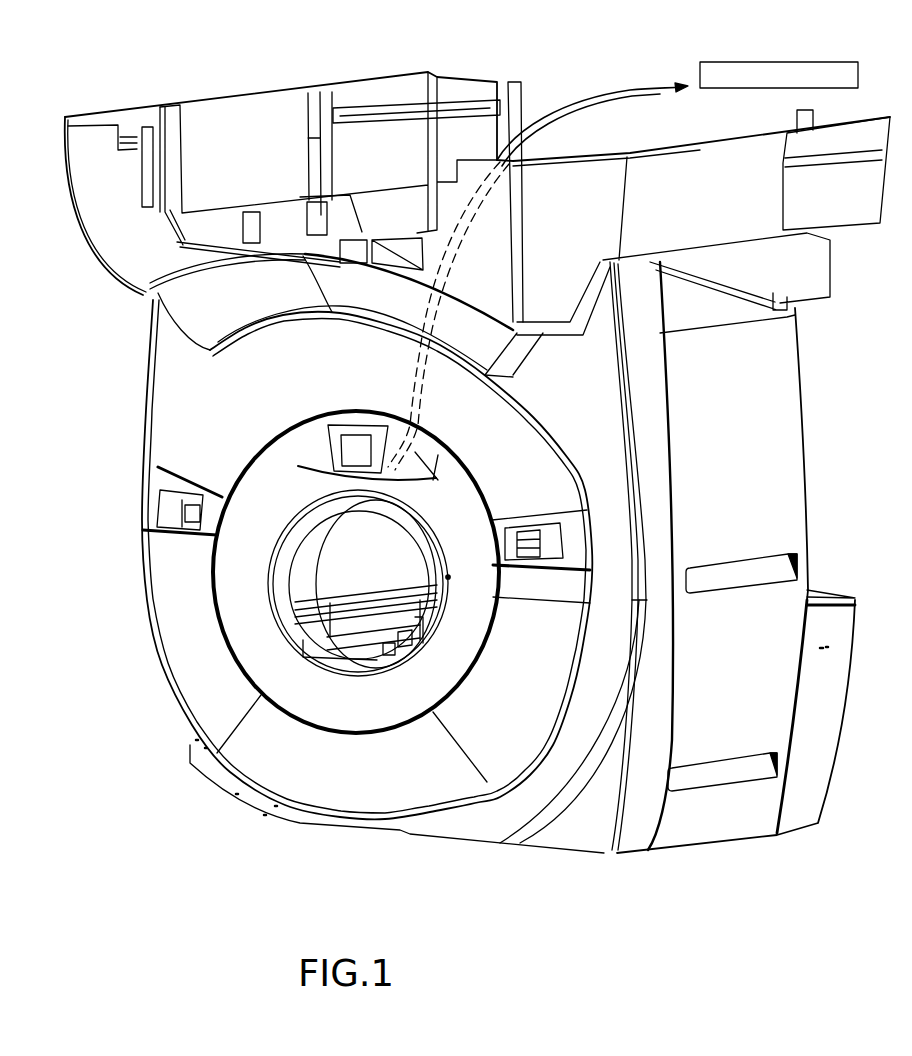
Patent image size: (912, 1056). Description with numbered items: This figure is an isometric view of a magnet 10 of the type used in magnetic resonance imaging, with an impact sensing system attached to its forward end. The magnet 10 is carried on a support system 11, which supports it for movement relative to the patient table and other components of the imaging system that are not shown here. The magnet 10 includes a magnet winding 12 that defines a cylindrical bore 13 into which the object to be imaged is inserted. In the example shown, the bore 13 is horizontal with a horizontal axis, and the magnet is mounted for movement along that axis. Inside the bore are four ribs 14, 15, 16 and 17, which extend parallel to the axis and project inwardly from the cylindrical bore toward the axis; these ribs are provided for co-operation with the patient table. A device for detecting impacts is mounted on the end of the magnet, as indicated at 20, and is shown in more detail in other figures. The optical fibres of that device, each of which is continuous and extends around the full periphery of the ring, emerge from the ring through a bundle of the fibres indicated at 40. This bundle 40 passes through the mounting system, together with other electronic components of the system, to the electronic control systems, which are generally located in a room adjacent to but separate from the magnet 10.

The magnet 10 is at (137, 468).
The support system 11 is at (682, 133).
The magnet winding 12 is at (393, 798).
The cylindrical bore 13 is at (300, 570).
The rib 14 is at (303, 609).
The rib 15 is at (345, 645).
The rib 16 is at (390, 650).
The rib 17 is at (405, 640).
The device for detecting impacts 20 is at (448, 577).
The bundle of the fibres 40 is at (555, 115).